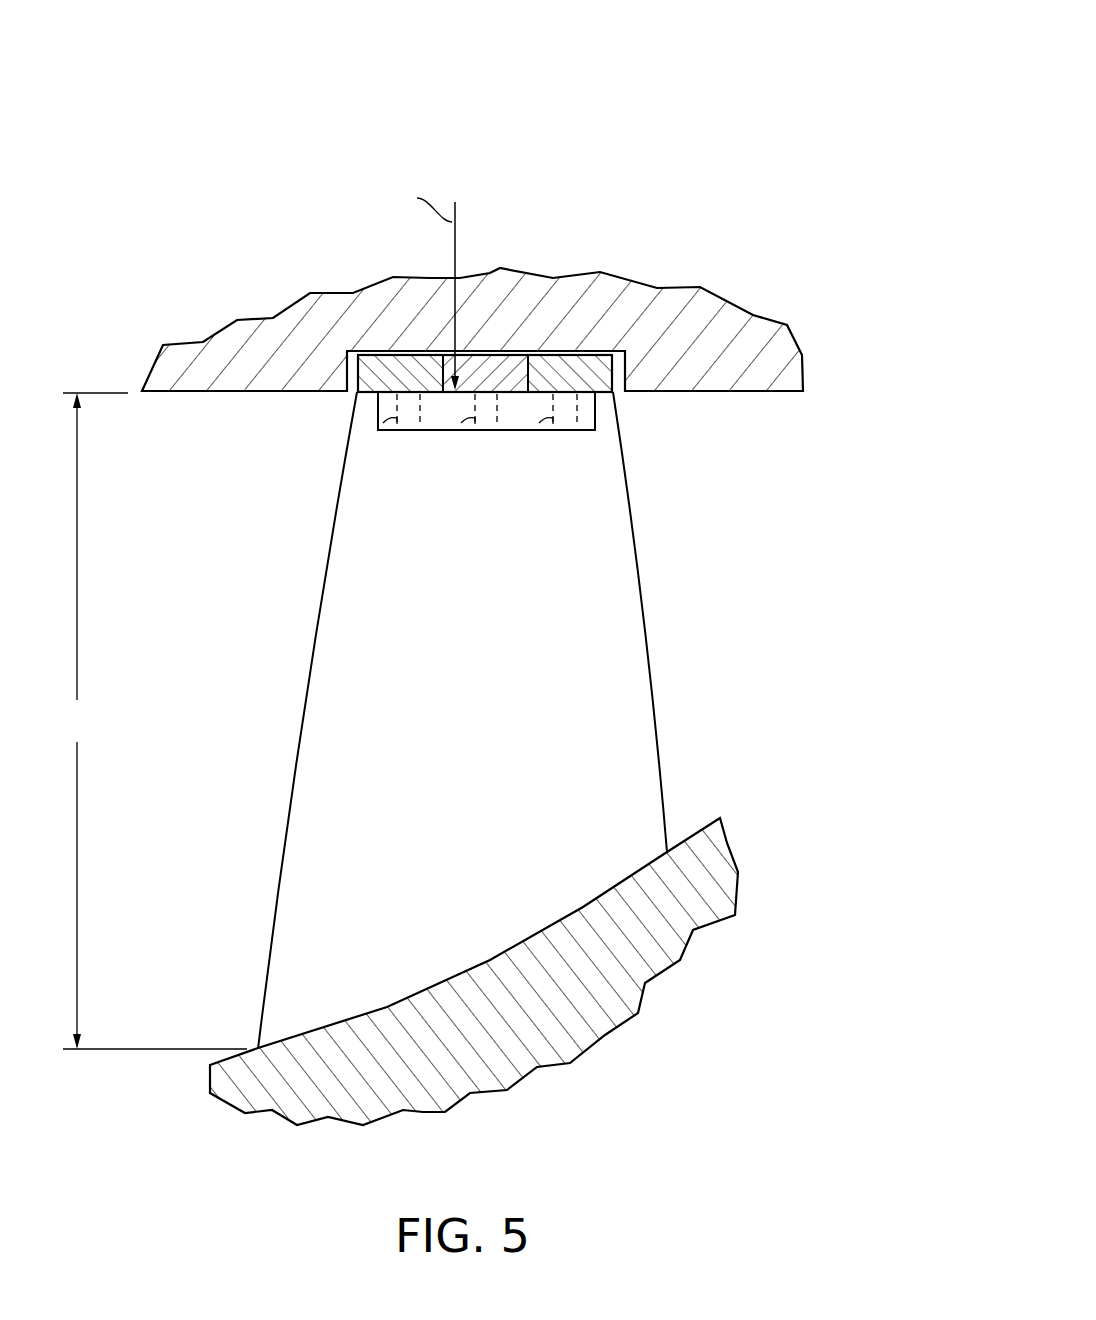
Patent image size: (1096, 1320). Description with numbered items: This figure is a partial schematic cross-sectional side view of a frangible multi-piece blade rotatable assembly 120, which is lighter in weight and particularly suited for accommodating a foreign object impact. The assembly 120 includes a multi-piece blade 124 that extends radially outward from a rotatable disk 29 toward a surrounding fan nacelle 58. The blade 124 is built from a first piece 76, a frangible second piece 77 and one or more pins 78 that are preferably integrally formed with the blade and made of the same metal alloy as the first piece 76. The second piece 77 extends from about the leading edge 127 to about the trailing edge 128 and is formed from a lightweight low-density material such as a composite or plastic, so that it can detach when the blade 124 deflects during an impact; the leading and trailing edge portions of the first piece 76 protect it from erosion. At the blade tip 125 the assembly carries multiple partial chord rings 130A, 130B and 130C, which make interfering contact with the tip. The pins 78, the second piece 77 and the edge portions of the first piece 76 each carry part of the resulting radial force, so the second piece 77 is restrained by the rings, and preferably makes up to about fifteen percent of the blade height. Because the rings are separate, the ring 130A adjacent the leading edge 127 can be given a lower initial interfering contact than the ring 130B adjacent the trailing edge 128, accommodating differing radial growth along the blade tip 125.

The frangible multi-piece blade rotatable assembly 120 is at (803, 145).
The fan nacelle 58 is at (796, 348).
The multi-piece blade 124 is at (713, 502).
The first piece 76 is at (510, 695).
The leading edge 127 is at (311, 656).
The trailing edge 128 is at (650, 665).
The blade tip 125 is at (568, 390).
The ring 130A is at (390, 355).
The ring 130B is at (517, 355).
The ring 130C is at (587, 355).
The frangible second piece 77 is at (383, 408).
The pins 78 is at (380, 428).
The rotatable disk 29 is at (490, 1055).